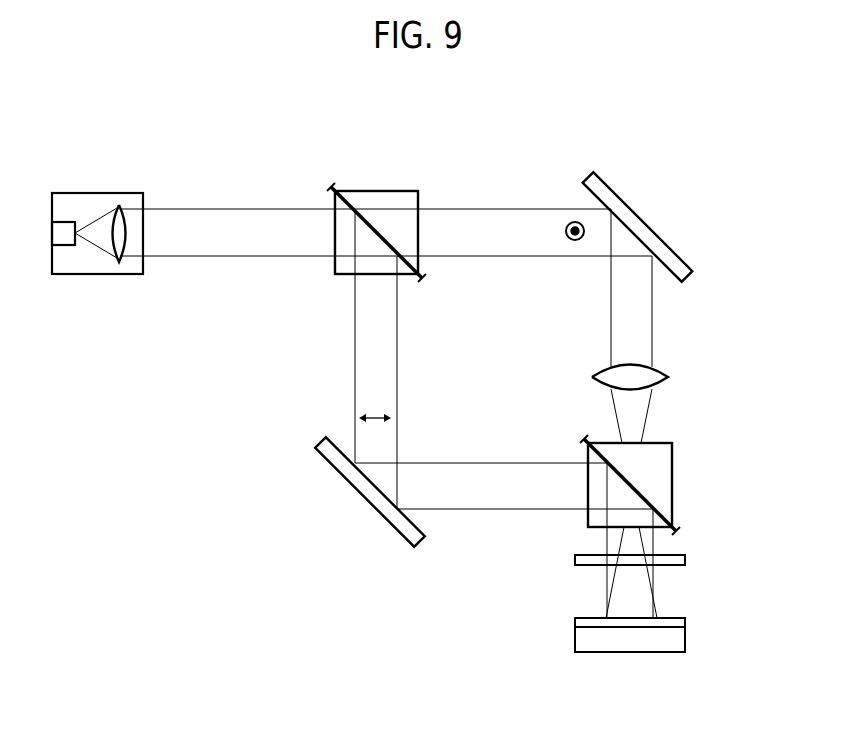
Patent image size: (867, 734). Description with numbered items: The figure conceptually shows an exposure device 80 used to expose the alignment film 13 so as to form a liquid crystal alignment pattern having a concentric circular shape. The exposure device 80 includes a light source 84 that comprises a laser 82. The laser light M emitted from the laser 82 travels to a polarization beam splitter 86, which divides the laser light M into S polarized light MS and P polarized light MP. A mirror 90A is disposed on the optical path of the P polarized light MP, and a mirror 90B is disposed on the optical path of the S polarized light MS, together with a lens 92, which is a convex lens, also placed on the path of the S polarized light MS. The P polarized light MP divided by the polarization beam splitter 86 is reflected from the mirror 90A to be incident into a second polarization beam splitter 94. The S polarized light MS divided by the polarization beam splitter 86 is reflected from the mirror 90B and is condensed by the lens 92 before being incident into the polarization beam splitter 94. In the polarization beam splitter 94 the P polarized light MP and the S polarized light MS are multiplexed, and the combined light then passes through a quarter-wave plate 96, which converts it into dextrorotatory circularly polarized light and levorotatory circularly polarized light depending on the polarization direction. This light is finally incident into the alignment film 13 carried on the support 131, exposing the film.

The exposure device 80 is at (528, 124).
The laser 82 is at (65, 221).
The light source 84 is at (121, 193).
The polarization beam splitter 86 is at (378, 191).
The mirror 90A is at (365, 502).
The mirror 90B is at (647, 222).
The lens 92 is at (668, 375).
The polarization beam splitter 94 is at (672, 468).
The λ/4 plate 96 is at (685, 560).
The alignment film 13 is at (685, 623).
The support 131 is at (685, 639).
The laser light M is at (222, 258).
The S polarized light MS is at (508, 258).
The P polarized light MP is at (354, 355).